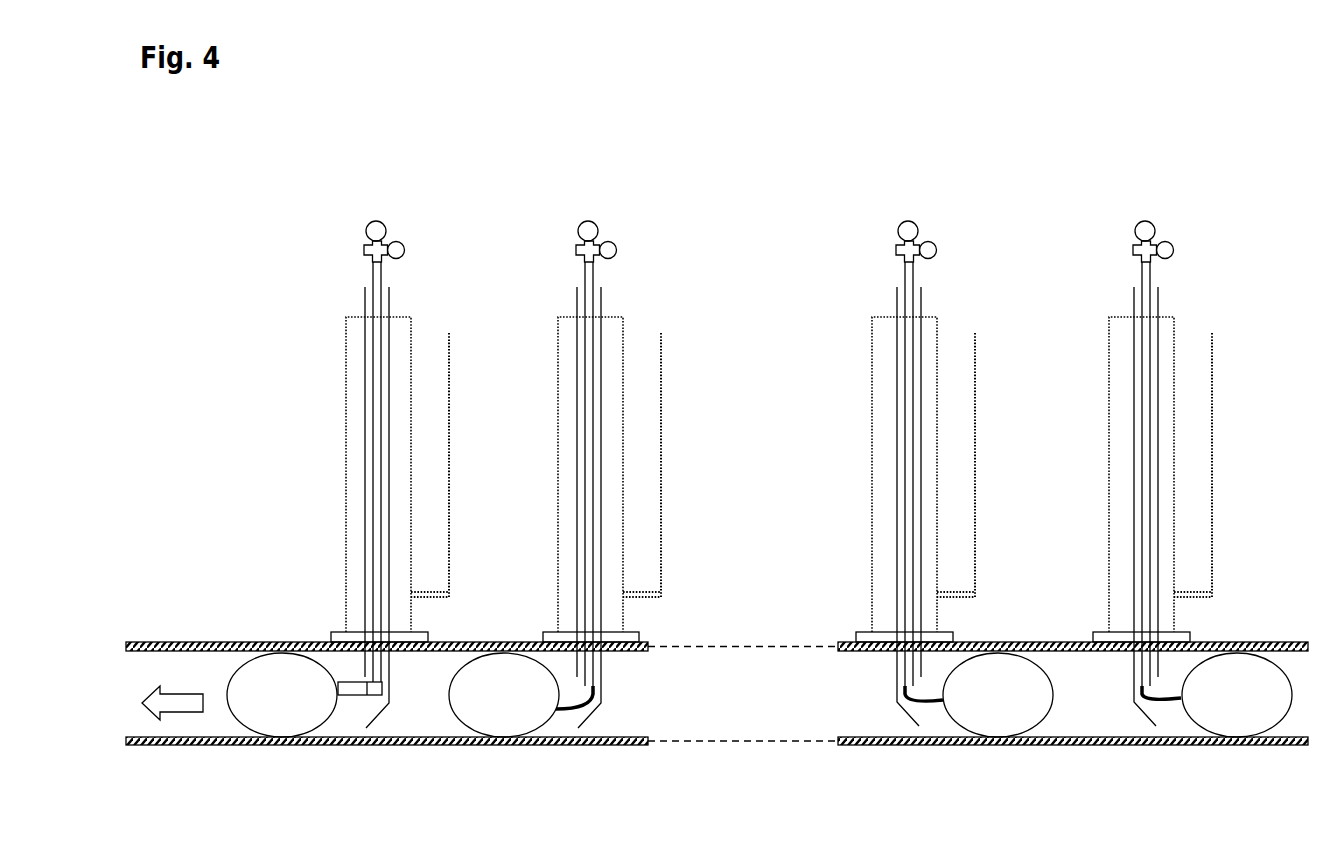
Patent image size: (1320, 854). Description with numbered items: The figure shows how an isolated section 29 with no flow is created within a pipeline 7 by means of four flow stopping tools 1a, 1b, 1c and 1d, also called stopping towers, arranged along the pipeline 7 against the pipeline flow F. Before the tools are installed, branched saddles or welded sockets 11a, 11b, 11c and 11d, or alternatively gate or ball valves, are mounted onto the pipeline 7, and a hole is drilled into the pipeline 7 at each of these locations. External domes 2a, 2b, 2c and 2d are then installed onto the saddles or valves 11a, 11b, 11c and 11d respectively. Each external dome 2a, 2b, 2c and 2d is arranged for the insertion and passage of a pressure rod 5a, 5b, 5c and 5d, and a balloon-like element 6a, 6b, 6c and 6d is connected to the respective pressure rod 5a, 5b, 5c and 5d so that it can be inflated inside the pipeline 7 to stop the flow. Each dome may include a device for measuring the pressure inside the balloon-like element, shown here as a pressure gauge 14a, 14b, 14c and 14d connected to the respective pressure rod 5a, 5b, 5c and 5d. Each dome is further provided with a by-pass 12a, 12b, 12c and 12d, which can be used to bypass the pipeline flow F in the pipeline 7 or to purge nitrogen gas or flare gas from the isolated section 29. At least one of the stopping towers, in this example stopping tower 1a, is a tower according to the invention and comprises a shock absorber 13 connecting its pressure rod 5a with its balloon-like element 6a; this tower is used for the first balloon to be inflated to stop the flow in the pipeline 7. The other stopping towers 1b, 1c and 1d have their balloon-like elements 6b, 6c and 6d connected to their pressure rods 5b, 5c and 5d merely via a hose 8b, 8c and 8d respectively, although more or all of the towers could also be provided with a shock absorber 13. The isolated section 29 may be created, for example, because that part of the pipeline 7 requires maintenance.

The flow stopping tool 1a is at (406, 483).
The flow stopping tool 1b is at (618, 505).
The flow stopping tool 1c is at (930, 501).
The flow stopping tool 1d is at (1171, 500).
The external dome 2a is at (347, 450).
The external dome 2b is at (559, 449).
The external dome 2c is at (873, 450).
The external dome 2d is at (1110, 448).
The pressure rod 5a is at (377, 277).
The pressure rod 5b is at (589, 277).
The pressure rod 5c is at (909, 277).
The pressure rod 5d is at (1146, 277).
The balloon-like element 6a is at (277, 697).
The balloon-like element 6b is at (503, 703).
The balloon-like element 6c is at (1000, 703).
The balloon-like element 6d is at (1240, 698).
The pipeline 7 is at (210, 642).
The hose 8b is at (572, 712).
The hose 8c is at (941, 703).
The hose 8d is at (1180, 703).
The branched saddle or welded socket 11a is at (338, 632).
The branched saddle or welded socket 11b is at (550, 632).
The branched saddle or welded socket 11c is at (866, 632).
The branched saddle or welded socket 11d is at (1102, 632).
The by-pass 12a is at (452, 386).
The by-pass 12b is at (664, 388).
The by-pass 12c is at (978, 394).
The by-pass 12d is at (1215, 394).
The shock absorber 13 is at (358, 688).
The pressure gauge 14a is at (395, 232).
The pressure gauge 14b is at (607, 232).
The pressure gauge 14c is at (927, 232).
The pressure gauge 14d is at (1164, 232).
The isolated section 29 is at (748, 763).
The pipeline flow F is at (172, 691).